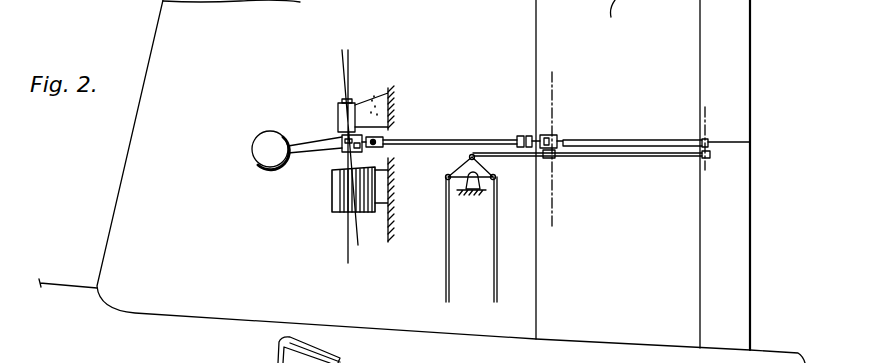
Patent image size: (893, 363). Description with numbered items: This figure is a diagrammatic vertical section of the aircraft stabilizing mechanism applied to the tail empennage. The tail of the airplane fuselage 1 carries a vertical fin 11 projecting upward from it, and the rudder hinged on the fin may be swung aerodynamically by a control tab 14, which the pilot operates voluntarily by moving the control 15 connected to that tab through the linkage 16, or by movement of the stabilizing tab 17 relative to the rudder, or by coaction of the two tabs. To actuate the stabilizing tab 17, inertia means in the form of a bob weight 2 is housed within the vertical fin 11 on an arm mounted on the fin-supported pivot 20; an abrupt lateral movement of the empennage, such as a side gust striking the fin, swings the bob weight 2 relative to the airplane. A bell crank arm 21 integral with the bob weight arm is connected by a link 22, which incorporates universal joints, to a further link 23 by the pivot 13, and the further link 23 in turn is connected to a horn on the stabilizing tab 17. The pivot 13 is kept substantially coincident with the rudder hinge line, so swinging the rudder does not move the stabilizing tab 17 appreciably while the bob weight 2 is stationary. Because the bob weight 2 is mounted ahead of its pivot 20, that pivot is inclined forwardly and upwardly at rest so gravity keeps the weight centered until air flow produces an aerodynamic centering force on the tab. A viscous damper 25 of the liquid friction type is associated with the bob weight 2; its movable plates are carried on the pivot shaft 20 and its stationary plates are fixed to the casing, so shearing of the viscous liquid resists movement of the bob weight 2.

The airplane fuselage 1 is at (66, 293).
The bob weight 2 is at (275, 145).
The vertical fin 11 is at (147, 146).
The pivot (rudder hinge line) 13 is at (550, 136).
The control tab 14 is at (717, 263).
The control 15 is at (496, 272).
The linkage 16 is at (620, 156).
The stabilizing tab 17 is at (717, 50).
The pivot shaft 20 is at (340, 104).
The bell crank arm 21 is at (342, 157).
The link 22 is at (452, 139).
The further link 23 is at (633, 140).
The viscous damper 25 is at (340, 197).